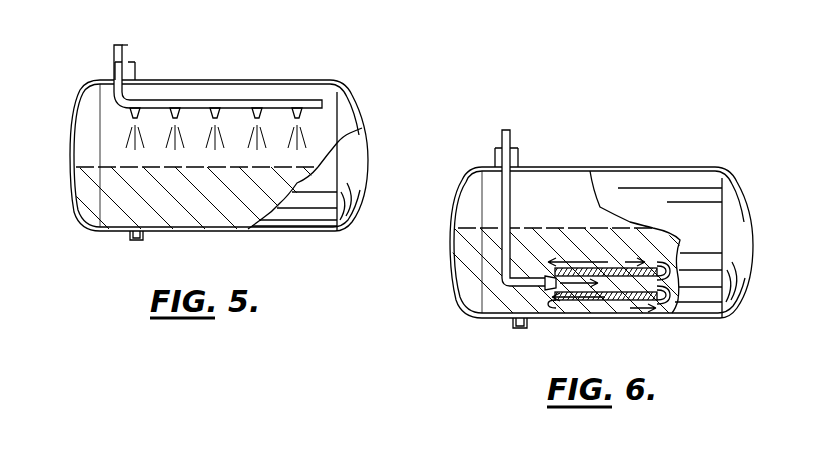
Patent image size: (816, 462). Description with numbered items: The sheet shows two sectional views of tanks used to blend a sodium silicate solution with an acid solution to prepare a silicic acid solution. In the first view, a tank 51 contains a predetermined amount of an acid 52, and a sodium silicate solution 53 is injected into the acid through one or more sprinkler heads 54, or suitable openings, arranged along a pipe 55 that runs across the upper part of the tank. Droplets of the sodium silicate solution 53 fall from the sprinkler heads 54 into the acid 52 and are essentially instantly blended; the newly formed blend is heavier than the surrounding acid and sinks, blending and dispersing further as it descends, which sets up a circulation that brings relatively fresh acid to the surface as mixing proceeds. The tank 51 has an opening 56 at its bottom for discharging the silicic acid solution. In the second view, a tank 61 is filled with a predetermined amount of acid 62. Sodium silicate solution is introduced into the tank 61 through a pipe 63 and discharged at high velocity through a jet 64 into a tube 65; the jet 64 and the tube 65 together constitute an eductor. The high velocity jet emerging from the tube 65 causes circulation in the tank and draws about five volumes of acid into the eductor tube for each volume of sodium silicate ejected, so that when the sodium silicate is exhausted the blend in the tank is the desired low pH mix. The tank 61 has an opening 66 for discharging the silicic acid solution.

In FIG. 5, the tank 51 is at (360, 113).
In FIG. 5, the acid 52 is at (110, 208).
In FIG. 5, the sodium silicate solution 53 is at (262, 140).
In FIG. 5, the sprinkler heads 54 is at (143, 110).
In FIG. 5, the pipe 55 is at (190, 101).
In FIG. 5, the opening 56 is at (138, 241).
In FIG. 6, the tank 61 is at (450, 261).
In FIG. 6, the acid 62 is at (633, 245).
In FIG. 6, the pipe 63 is at (512, 138).
In FIG. 6, the jet 64 is at (568, 262).
In FIG. 6, the tube 65 is at (630, 301).
In FIG. 6, the opening 66 is at (521, 329).